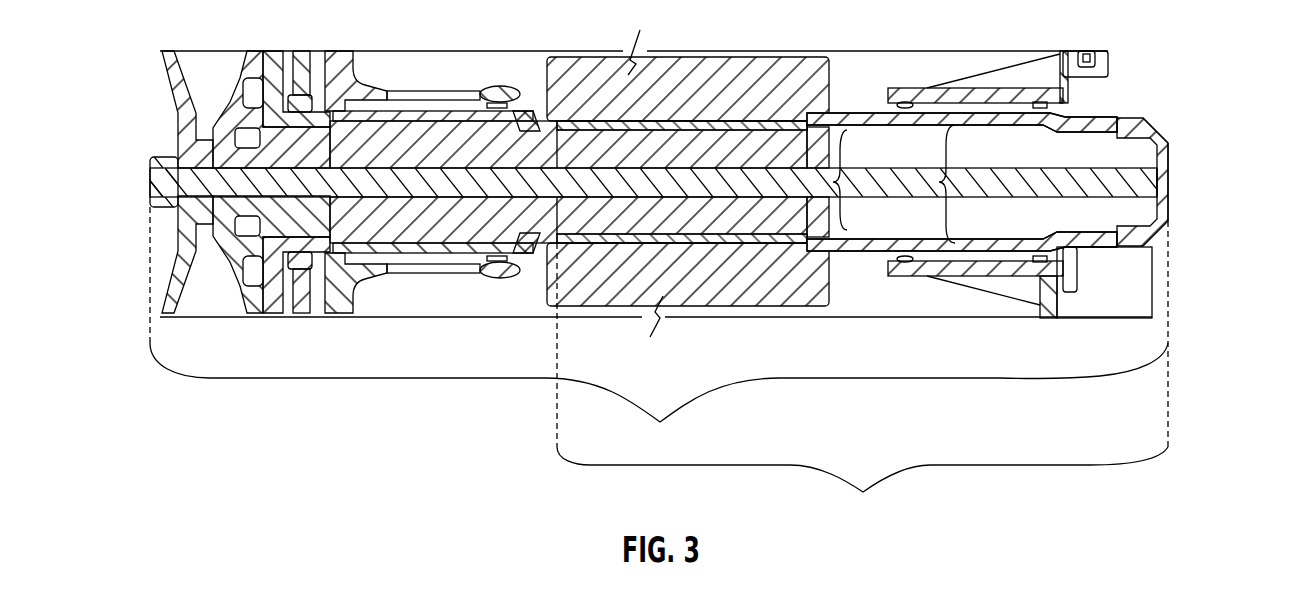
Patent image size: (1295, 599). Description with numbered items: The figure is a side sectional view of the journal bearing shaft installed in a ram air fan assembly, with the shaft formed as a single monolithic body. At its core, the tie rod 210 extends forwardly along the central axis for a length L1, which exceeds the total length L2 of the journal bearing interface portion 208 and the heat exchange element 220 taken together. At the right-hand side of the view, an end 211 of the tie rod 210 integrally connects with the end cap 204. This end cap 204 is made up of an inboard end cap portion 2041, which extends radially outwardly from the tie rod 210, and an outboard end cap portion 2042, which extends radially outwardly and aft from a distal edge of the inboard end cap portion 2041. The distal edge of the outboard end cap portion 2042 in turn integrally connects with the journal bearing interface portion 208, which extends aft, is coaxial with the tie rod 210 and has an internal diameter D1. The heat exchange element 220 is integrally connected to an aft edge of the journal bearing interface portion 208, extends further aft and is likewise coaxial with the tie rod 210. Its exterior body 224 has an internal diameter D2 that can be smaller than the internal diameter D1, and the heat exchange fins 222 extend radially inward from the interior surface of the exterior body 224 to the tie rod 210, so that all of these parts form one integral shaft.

The end cap 204 is at (1191, 176).
The inboard end cap portion 2041 is at (1176, 202).
The outboard end cap portion 2042 is at (1160, 137).
The journal bearing interface portion 208 is at (1103, 118).
The tie rod 210 is at (150, 197).
The end of the tie rod 211 is at (1143, 180).
The heat exchange element 220 is at (648, 203).
The heat exchange fins 222 is at (740, 218).
The exterior body 224 is at (720, 243).
The internal diameter of the journal bearing interface portion D1 is at (952, 180).
The internal diameter of the exterior body D2 is at (848, 180).
The length of the tie rod L1 is at (659, 401).
The total length of the journal bearing interface portion and heat exchange element L2 is at (862, 487).